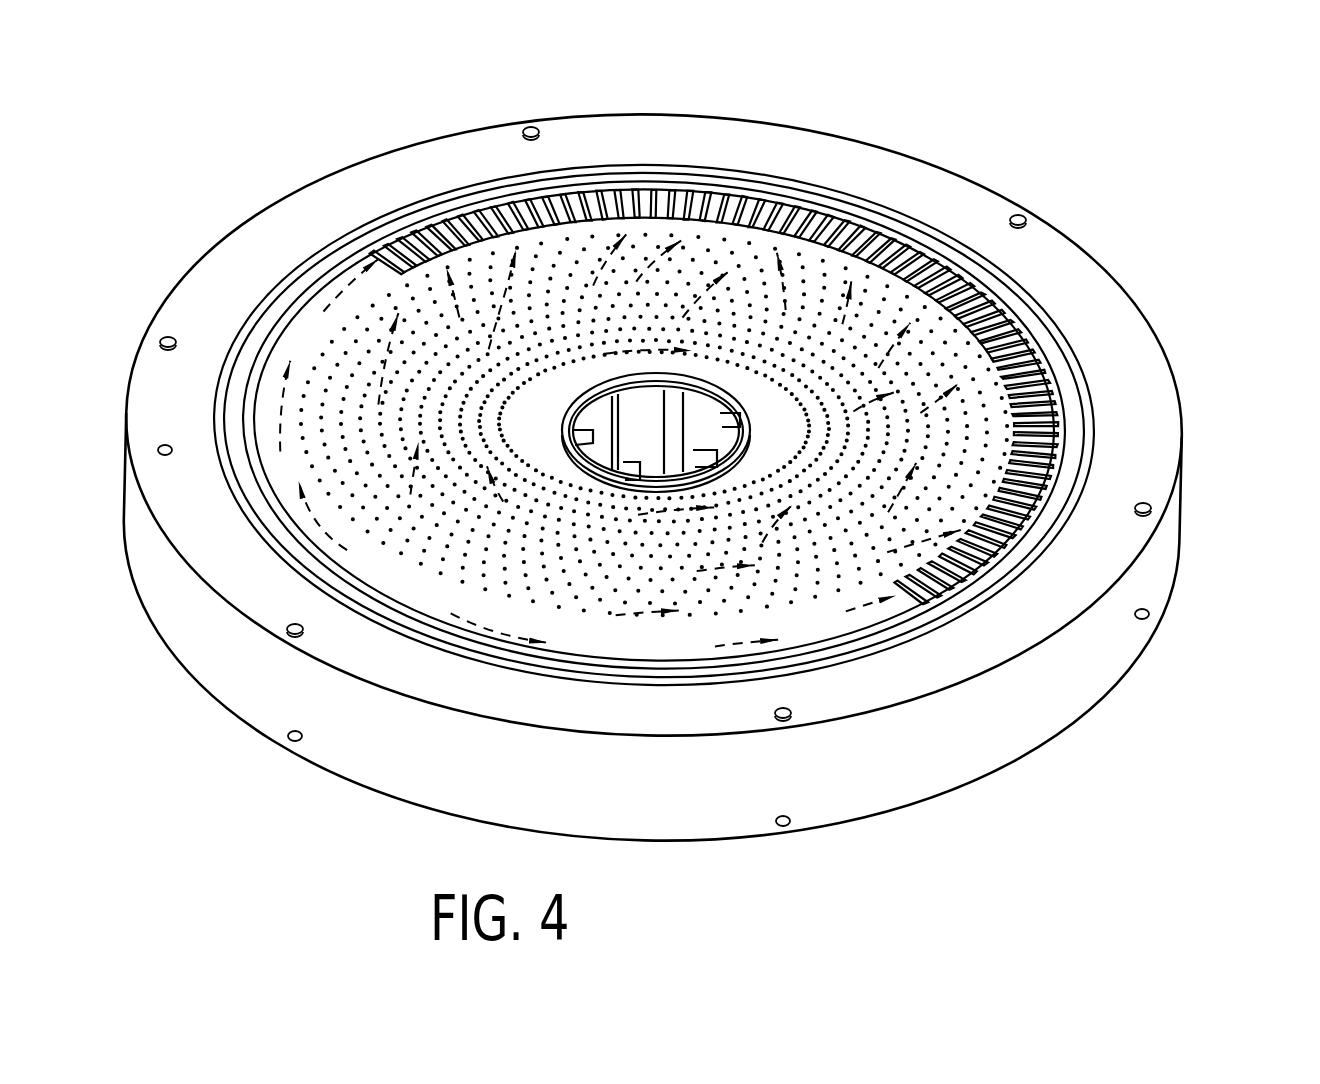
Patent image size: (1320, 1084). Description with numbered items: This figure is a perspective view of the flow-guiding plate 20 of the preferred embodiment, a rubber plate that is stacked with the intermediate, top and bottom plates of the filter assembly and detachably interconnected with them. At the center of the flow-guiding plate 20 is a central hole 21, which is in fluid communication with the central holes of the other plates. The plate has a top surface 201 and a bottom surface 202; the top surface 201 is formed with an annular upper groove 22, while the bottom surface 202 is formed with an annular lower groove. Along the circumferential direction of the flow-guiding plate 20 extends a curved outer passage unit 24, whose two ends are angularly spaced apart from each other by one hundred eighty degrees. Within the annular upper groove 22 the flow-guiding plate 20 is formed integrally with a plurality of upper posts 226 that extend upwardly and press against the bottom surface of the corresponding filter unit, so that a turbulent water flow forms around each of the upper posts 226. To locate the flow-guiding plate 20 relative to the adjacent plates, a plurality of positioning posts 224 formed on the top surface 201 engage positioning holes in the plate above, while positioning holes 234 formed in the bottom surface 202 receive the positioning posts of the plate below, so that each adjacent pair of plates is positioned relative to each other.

The flow-guiding plate 20 is at (1081, 231).
The top surface 201 is at (1105, 315).
The bottom surface 202 is at (1089, 714).
The central hole 21 is at (631, 407).
The annular upper groove 22 is at (379, 575).
The positioning posts 224 is at (1144, 503).
The upper posts 226 is at (593, 260).
The positioning holes 234 is at (1149, 620).
The curved outer passage unit 24 is at (685, 200).